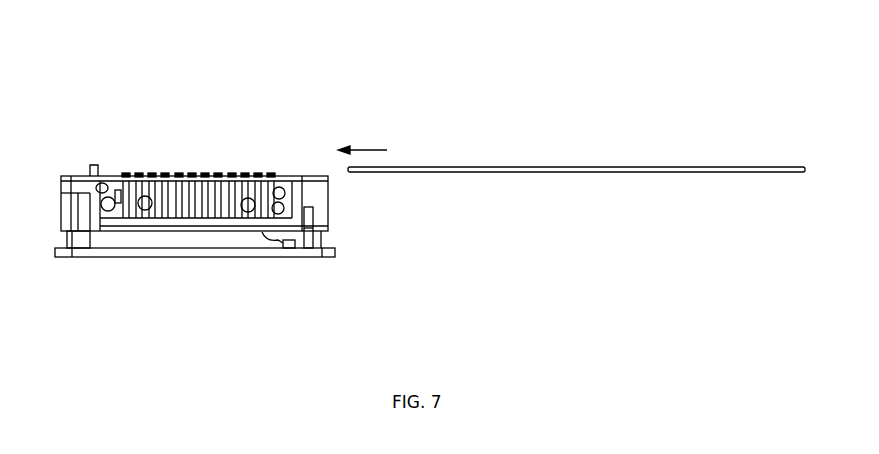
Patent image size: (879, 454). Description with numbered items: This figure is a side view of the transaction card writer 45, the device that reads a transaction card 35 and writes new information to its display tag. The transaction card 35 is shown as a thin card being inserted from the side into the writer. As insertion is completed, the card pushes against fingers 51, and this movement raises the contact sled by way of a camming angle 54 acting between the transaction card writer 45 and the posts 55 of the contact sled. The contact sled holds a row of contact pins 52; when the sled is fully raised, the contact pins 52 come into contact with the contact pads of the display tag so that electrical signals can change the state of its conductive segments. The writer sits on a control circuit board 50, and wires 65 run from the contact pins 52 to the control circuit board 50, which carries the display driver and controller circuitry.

The transaction card 35 is at (636, 167).
The transaction card writer 45 is at (348, 218).
The control circuit board 50 is at (295, 256).
The fingers 51 is at (93, 165).
The contact pins 52 is at (248, 177).
The camming angle 54 is at (115, 198).
The posts 55 is at (103, 183).
The wires 65 is at (272, 237).